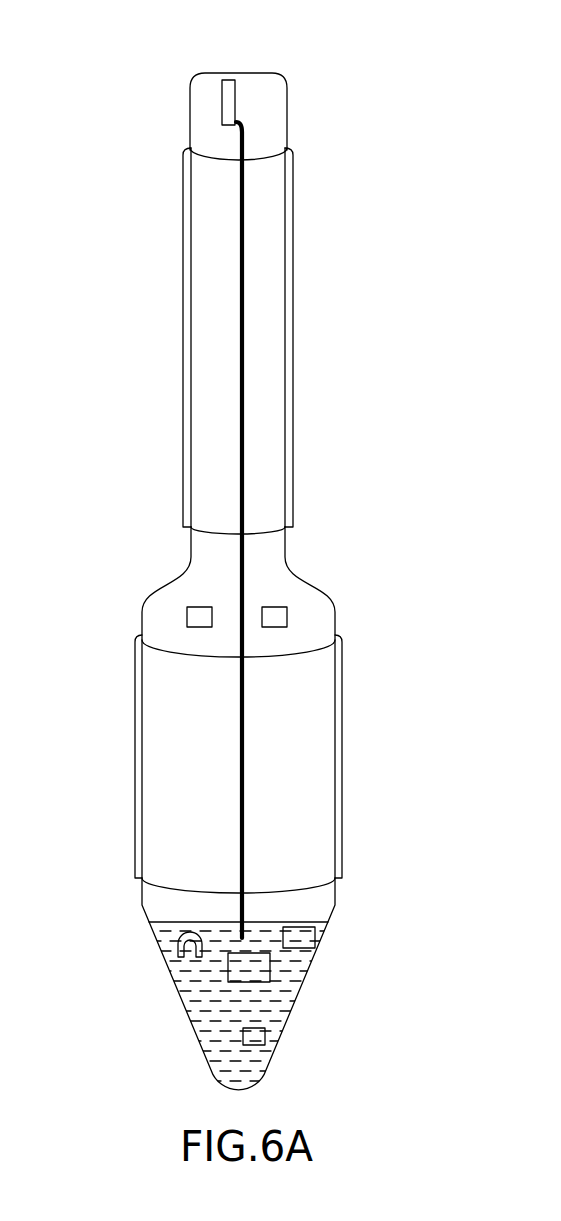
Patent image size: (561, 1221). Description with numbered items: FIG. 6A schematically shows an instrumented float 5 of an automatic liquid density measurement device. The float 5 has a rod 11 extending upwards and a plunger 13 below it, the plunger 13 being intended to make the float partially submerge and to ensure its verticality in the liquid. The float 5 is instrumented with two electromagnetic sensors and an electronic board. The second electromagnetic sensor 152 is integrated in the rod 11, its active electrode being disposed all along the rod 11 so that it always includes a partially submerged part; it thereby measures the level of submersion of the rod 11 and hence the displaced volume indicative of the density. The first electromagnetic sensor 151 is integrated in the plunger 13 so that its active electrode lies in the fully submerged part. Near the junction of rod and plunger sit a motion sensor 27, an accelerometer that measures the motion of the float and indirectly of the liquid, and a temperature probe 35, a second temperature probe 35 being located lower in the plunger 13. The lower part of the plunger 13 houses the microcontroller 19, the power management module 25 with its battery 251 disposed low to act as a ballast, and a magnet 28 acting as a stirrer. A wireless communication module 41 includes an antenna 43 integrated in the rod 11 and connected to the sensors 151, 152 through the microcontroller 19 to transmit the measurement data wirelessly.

The float 5 is at (402, 414).
The rod 11 is at (190, 127).
The antenna 43 is at (228, 91).
The wireless communication module 41 is at (253, 213).
The second electromagnetic sensor 152 is at (302, 325).
The plunger 13 is at (142, 627).
The motion sensor 27 is at (190, 617).
The temperature probe 35 is at (280, 617).
The first electromagnetic sensor 151 is at (353, 732).
The magnet 28 is at (178, 948).
The battery 251 is at (240, 967).
The microcontroller 19 is at (303, 933).
The power management module 25 is at (234, 997).